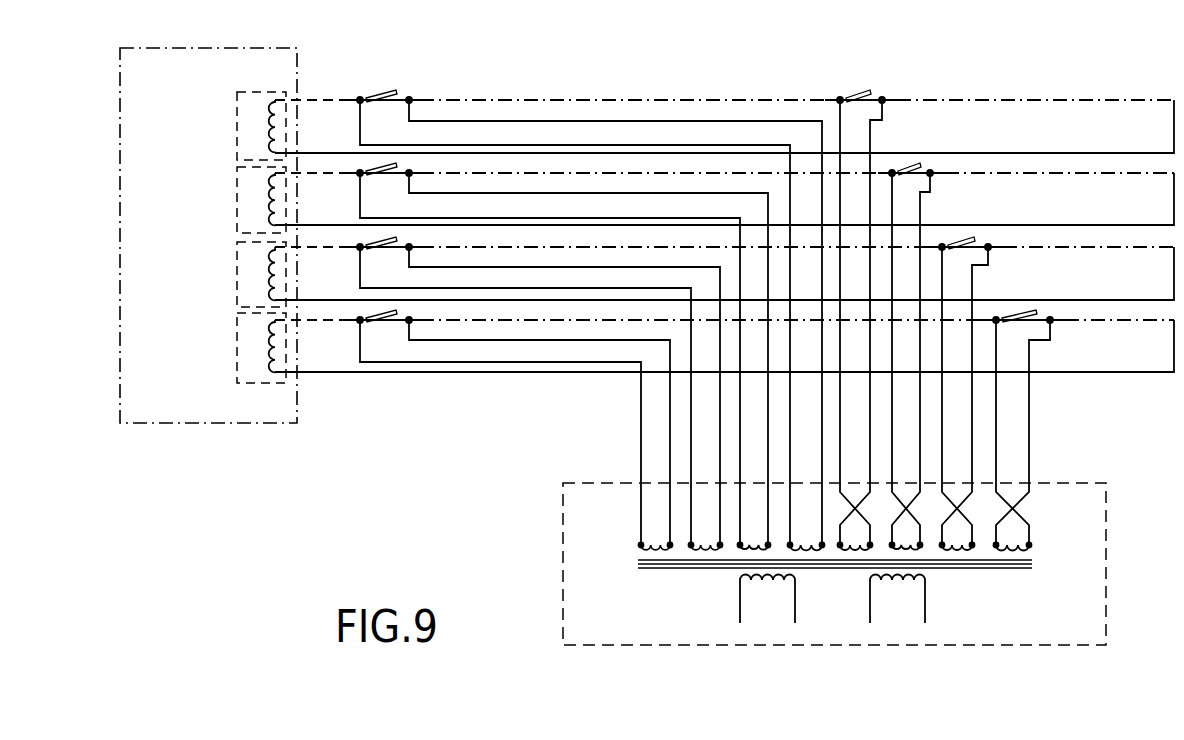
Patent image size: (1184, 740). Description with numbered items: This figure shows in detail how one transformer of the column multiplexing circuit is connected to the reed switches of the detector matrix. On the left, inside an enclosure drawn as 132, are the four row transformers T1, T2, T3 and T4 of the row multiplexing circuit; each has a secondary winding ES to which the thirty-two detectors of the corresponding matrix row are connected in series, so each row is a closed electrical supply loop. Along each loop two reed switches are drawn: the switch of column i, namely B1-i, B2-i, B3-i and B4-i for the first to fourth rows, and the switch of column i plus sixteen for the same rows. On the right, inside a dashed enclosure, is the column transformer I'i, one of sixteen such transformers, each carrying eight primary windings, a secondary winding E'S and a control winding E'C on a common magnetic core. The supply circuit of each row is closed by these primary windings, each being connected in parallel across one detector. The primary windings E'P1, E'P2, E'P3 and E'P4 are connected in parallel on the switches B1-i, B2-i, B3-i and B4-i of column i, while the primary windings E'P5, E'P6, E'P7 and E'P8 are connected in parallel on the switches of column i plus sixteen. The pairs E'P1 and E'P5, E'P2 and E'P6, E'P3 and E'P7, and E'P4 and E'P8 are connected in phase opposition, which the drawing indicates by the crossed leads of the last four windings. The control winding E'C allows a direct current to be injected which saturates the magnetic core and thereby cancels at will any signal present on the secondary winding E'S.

The input transformer block 132 is at (327, 68).
The transformer T1 is at (226, 128).
The transformer T2 is at (237, 228).
The transformer T3 is at (237, 300).
The transformer T4 is at (237, 375).
The secondary winding ES is at (264, 126).
The switch B1-i is at (392, 79).
The switch B2-i is at (348, 192).
The switch B3-i is at (348, 260).
The switch B4-i is at (348, 332).
The transformer I'i is at (834, 564).
The primary winding E'P1 is at (592, 325).
The primary winding E'P2 is at (565, 361).
The primary winding E'P3 is at (541, 398).
The primary winding E'P4 is at (516, 435).
The primary winding E'P5 is at (860, 325).
The primary winding E'P6 is at (910, 361).
The primary winding E'P7 is at (964, 398).
The primary winding E'P8 is at (1022, 435).
The control winding E'C is at (767, 599).
The secondary winding E'S is at (897, 599).